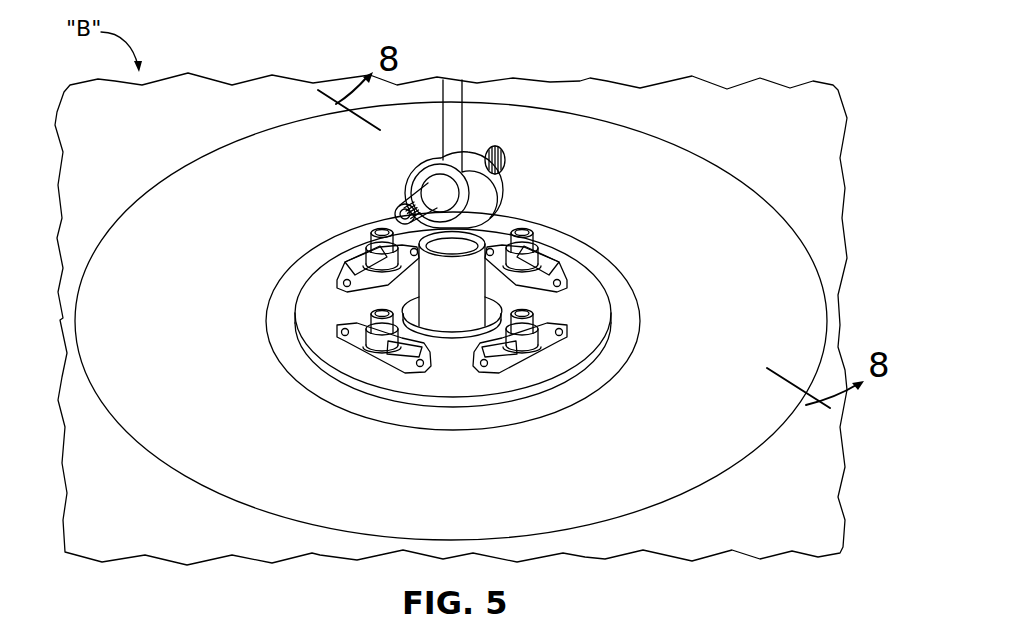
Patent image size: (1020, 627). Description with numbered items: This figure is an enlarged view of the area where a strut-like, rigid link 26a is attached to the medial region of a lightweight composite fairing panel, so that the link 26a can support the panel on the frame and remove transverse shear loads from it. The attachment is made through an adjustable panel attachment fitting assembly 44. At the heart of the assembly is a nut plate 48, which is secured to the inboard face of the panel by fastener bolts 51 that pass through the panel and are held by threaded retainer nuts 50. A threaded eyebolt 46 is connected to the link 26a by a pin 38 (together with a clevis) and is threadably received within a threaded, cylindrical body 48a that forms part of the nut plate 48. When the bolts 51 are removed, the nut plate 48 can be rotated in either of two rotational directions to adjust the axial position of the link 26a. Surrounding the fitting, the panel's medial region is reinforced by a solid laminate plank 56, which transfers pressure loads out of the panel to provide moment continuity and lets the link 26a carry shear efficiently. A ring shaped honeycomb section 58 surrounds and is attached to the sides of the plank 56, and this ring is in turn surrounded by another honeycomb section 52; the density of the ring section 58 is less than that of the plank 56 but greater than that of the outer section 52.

The rigid link 26a is at (455, 92).
The pin 38 is at (500, 148).
The adjustable panel attachment fitting assembly 44 is at (351, 206).
The threaded eyebolt 46 is at (505, 226).
The nut plate 48 is at (334, 308).
The threaded cylindrical body 48a is at (465, 280).
The threaded retainer nut 50 is at (570, 329).
The fastener bolt 51 is at (527, 303).
The honeycomb section 52 is at (103, 463).
The solid laminate plank 56 is at (577, 383).
The ring shaped honeycomb section 58 is at (113, 310).